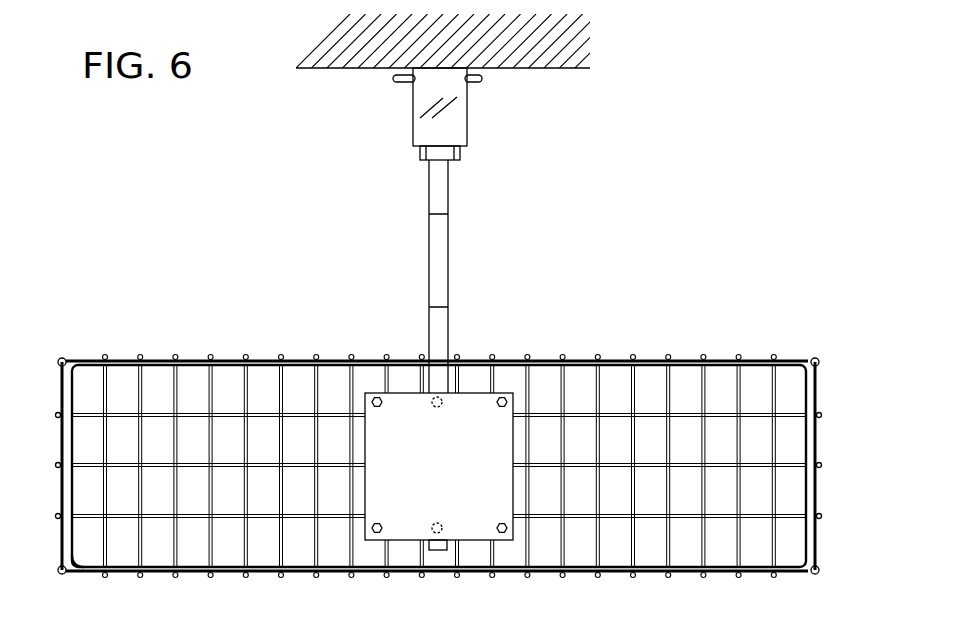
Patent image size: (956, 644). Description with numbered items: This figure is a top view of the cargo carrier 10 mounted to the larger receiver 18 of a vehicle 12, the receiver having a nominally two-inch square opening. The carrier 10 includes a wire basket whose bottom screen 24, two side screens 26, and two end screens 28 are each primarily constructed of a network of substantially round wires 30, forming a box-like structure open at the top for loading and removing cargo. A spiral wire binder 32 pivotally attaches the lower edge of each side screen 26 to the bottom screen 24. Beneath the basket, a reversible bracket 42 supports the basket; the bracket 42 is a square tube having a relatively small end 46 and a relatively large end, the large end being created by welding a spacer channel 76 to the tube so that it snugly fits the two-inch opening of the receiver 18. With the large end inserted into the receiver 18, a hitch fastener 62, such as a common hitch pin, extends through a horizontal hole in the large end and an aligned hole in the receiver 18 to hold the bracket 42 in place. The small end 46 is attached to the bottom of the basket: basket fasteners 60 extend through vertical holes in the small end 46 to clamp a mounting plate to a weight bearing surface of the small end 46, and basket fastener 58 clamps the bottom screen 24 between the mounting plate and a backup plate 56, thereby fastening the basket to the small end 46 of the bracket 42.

The cargo carrier 10 is at (698, 173).
The vehicle 12 is at (556, 68).
The larger receiver 18 is at (413, 128).
The hitch fastener 62 is at (473, 83).
The channel 76 is at (418, 155).
The reversible bracket 42 is at (449, 253).
The bottom screen 24 is at (647, 413).
The side screens 26 is at (282, 357).
The end screens 28 is at (62, 392).
The round wires 30 is at (207, 403).
The spiral wire binder 32 is at (97, 567).
The backup plate 56 is at (473, 392).
The basket fastener 58 is at (498, 403).
The basket fasteners 60 is at (437, 410).
The small end 46 is at (437, 550).